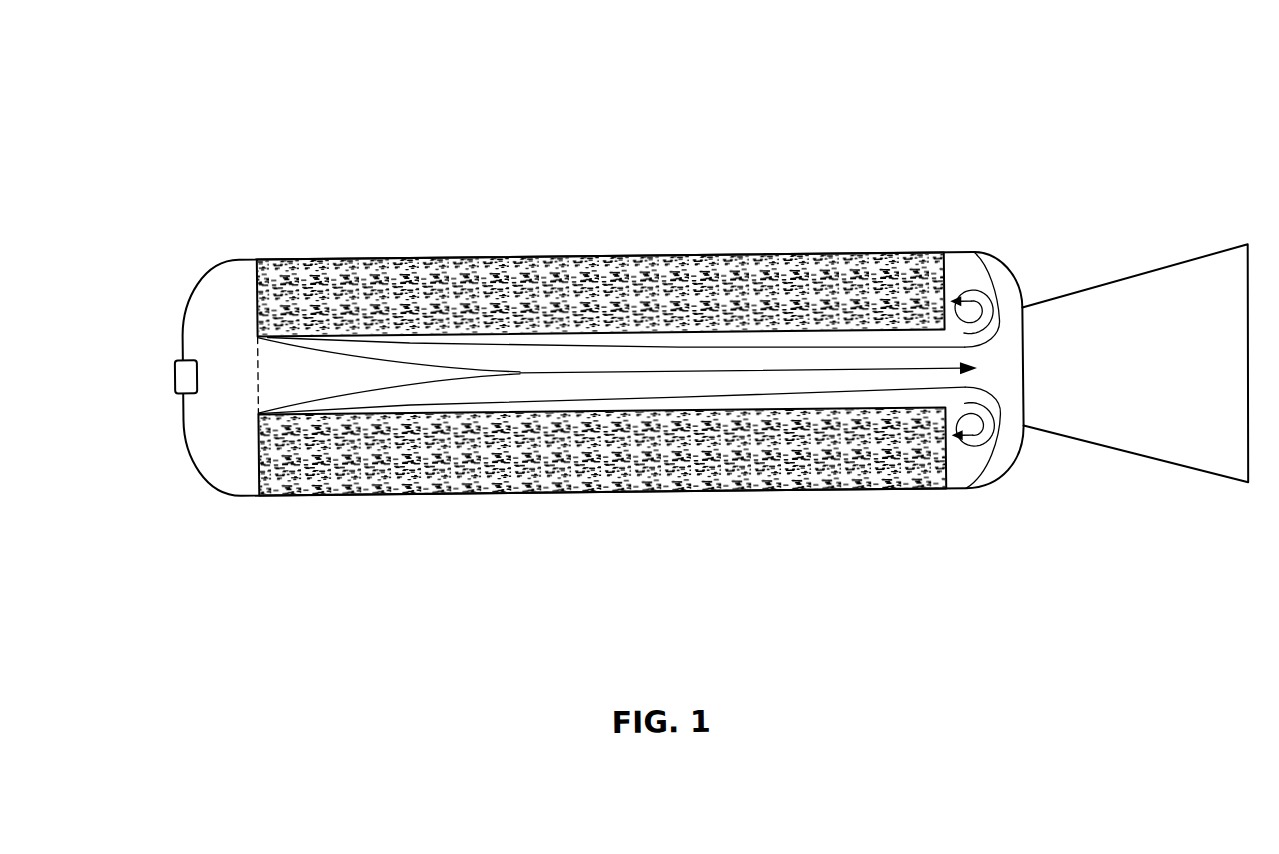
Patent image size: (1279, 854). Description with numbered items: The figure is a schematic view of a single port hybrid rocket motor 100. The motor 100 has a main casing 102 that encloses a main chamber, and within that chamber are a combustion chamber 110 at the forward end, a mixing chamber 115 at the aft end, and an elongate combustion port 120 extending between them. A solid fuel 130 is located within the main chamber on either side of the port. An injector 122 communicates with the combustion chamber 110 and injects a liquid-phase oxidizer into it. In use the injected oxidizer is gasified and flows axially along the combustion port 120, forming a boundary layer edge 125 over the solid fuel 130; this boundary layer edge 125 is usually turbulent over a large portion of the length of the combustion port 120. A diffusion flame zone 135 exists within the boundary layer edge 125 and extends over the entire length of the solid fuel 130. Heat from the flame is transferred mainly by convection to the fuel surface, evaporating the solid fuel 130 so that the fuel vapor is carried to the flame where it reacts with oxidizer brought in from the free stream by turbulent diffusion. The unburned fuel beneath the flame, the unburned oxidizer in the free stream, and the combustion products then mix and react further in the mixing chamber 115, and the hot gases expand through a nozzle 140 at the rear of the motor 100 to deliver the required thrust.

The single port hybrid rocket motor 100 is at (351, 90).
The main casing 102 is at (374, 255).
The combustion chamber 110 is at (243, 268).
The mixing chamber 115 is at (981, 461).
The combustion port 120 is at (643, 361).
The injector 122 is at (175, 374).
The boundary layer edge 125 is at (375, 387).
The solid fuel 130 is at (637, 465).
The diffusion flame zone 135 is at (847, 353).
The nozzle 140 is at (1156, 466).